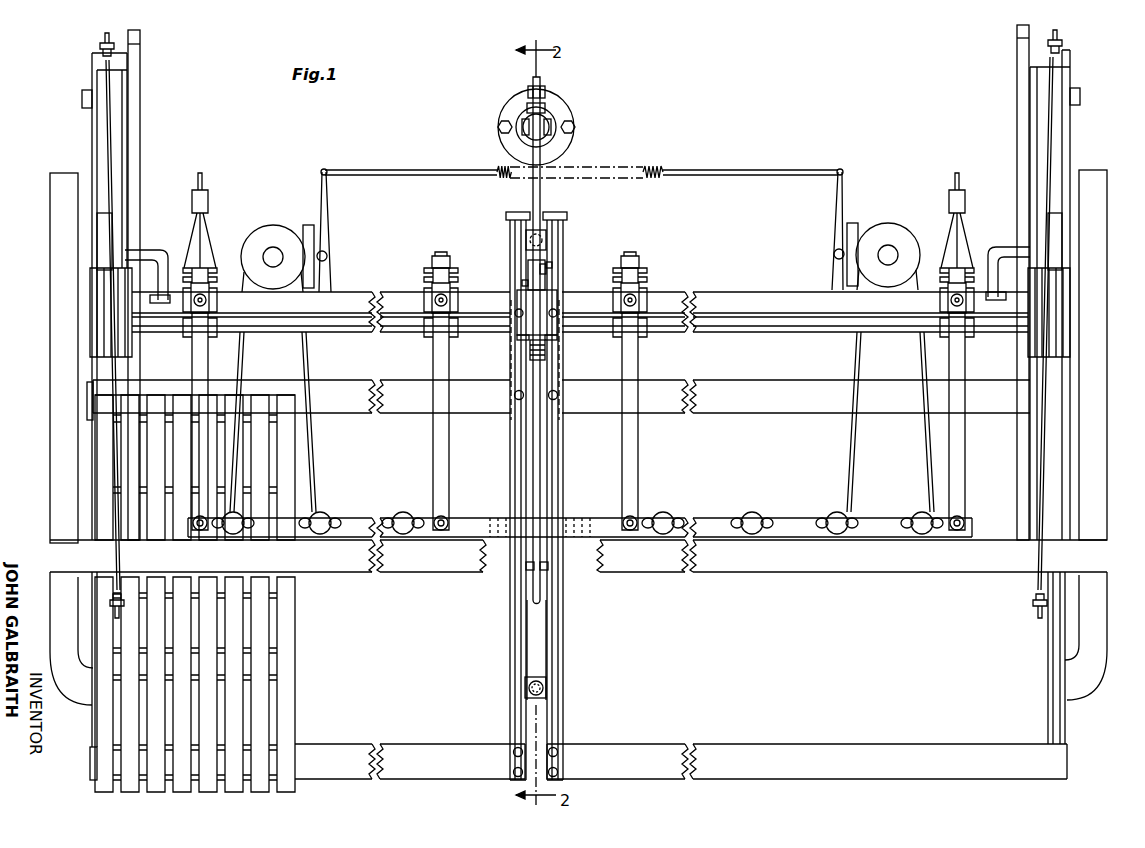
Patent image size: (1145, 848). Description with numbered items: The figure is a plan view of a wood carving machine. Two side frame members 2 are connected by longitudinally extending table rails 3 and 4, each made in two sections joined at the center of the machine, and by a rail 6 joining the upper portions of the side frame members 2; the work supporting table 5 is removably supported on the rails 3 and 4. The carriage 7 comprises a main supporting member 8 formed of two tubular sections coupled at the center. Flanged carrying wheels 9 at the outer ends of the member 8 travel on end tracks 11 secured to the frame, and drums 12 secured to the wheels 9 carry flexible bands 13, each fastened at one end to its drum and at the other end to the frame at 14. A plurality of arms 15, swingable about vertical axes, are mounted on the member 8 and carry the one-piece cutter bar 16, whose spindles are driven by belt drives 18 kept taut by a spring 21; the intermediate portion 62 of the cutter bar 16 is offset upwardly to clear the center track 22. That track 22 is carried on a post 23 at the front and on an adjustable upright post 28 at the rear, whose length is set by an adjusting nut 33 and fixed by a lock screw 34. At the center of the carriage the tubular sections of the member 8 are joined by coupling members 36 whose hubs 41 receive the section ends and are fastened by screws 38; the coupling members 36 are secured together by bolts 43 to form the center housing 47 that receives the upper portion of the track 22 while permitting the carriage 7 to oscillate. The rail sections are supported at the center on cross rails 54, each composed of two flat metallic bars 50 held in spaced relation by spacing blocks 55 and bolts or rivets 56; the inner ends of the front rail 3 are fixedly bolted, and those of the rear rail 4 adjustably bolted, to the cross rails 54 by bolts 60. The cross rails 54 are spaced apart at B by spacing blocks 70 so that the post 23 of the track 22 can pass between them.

The side frame member 2 is at (50, 420).
The front rail 3 is at (424, 779).
The rear rail 4 is at (333, 393).
The work supporting table 5 is at (300, 711).
The rail 6 is at (355, 573).
The carriage 7 is at (748, 285).
The main supporting member 8 is at (408, 333).
The flanged carrying wheel 9 is at (88, 337).
The track 11 is at (92, 140).
The drum 12 is at (131, 345).
The flexible band 13 is at (116, 185).
The band attachment to frame 14 is at (100, 46).
The arm 15 is at (192, 373).
The cutter bar 16 is at (455, 518).
The belt drive 18 is at (313, 503).
The spring 21 is at (650, 166).
The track 22 is at (541, 192).
The post 23 is at (526, 574).
The upright post 28 is at (575, 115).
The adjusting nut 33 is at (524, 130).
The lock screw 34 is at (546, 92).
The coupling member 36 is at (551, 264).
The screw 38 is at (555, 310).
The hub 41 is at (519, 339).
The bolt 43 is at (547, 272).
The center housing 47 is at (528, 268).
The flat metallic bar 50 is at (527, 641).
The cross rail 54 is at (505, 658).
The spacing block 55 is at (512, 212).
The bolt or rivet 56 is at (509, 216).
The bolt 60 is at (517, 398).
The intermediate portion of cutter bar 62 is at (492, 518).
The spacing block 70 is at (526, 240).
The space between cross rails B is at (533, 665).